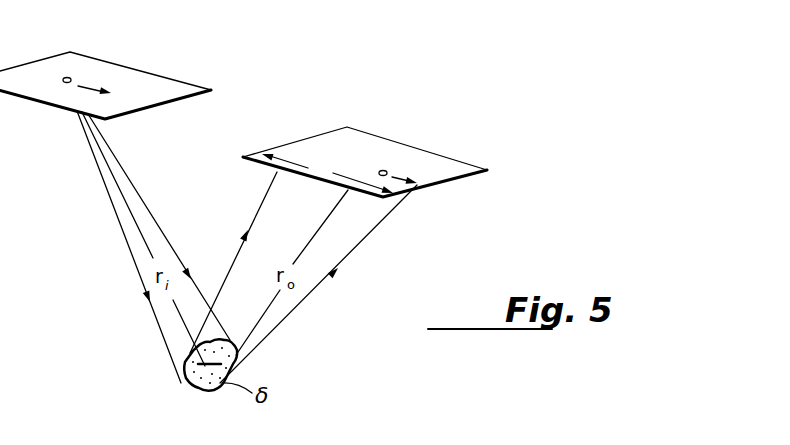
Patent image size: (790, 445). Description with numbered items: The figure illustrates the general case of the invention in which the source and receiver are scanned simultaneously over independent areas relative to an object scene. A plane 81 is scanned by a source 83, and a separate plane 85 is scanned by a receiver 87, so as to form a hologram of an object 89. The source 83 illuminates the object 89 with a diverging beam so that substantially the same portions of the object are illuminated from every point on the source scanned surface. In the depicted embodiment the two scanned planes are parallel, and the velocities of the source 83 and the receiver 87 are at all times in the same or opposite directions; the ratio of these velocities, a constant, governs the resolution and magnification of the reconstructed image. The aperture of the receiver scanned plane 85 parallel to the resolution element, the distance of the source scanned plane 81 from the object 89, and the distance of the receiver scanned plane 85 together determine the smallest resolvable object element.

The plane scanned by source 81 is at (145, 85).
The source 83 is at (65, 77).
The plane scanned by receiver 85 is at (341, 154).
The receiver 87 is at (387, 170).
The object 89 is at (196, 388).